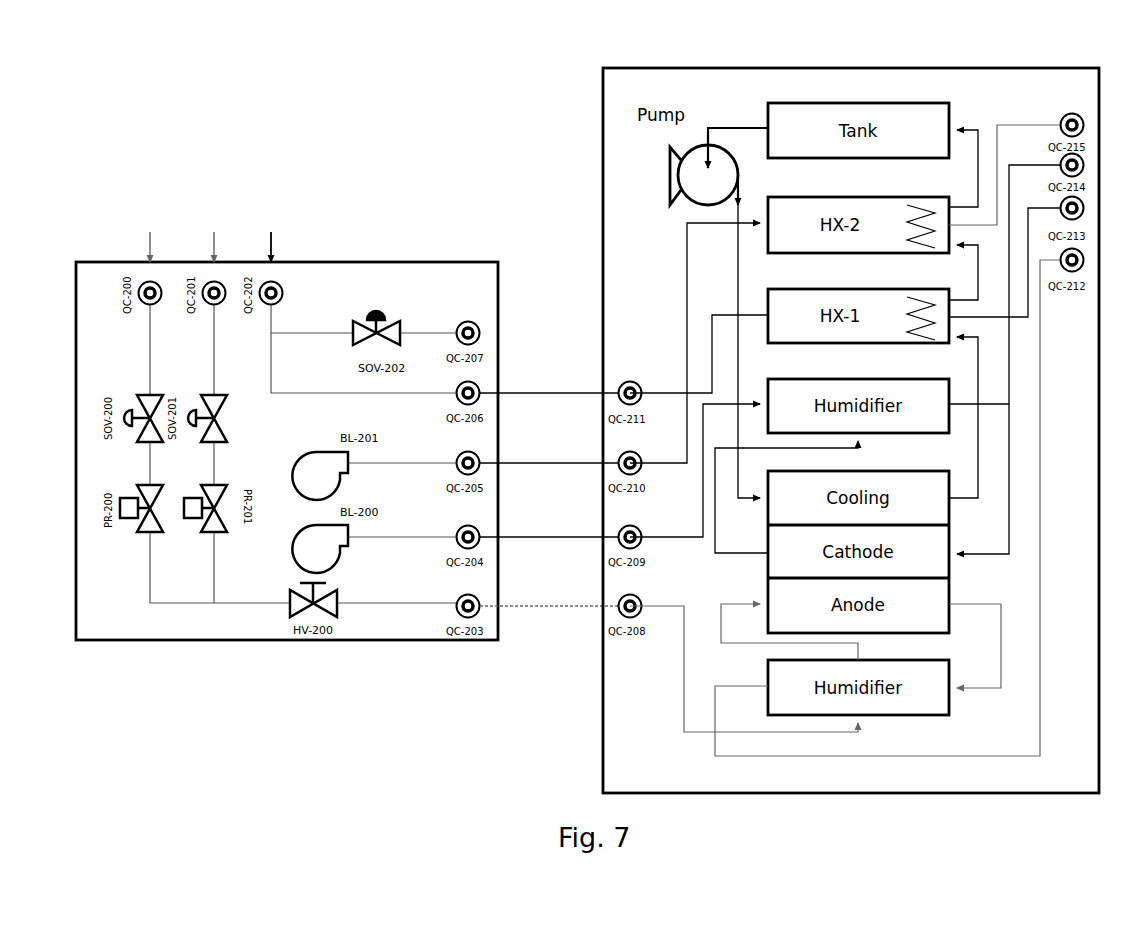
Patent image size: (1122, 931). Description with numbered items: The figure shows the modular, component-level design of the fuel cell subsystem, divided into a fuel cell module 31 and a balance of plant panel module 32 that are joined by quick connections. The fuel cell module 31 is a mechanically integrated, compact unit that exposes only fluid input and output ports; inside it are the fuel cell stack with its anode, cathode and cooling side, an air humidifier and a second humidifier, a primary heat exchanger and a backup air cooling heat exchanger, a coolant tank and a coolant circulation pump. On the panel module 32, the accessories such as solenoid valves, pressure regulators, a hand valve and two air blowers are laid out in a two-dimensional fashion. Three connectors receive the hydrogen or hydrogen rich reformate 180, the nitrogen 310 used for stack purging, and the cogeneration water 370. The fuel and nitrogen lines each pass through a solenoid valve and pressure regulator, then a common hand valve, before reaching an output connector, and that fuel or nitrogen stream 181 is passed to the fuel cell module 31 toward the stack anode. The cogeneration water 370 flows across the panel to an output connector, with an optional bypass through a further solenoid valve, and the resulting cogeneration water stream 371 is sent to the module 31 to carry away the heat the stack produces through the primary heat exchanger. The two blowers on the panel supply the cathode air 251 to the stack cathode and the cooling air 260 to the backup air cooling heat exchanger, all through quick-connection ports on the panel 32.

The fuel cell module 31 is at (707, 68).
The balance of plant panel module 32 is at (402, 262).
The hydrogen or hydrogen rich reformate 180 is at (150, 248).
The nitrogen 310 is at (214, 248).
The cogeneration water 370 is at (273, 248).
The coolant line 371 is at (527, 395).
The cooling air 260 is at (527, 465).
The cathode air 251 is at (527, 539).
The hydrogen line 181 is at (527, 608).